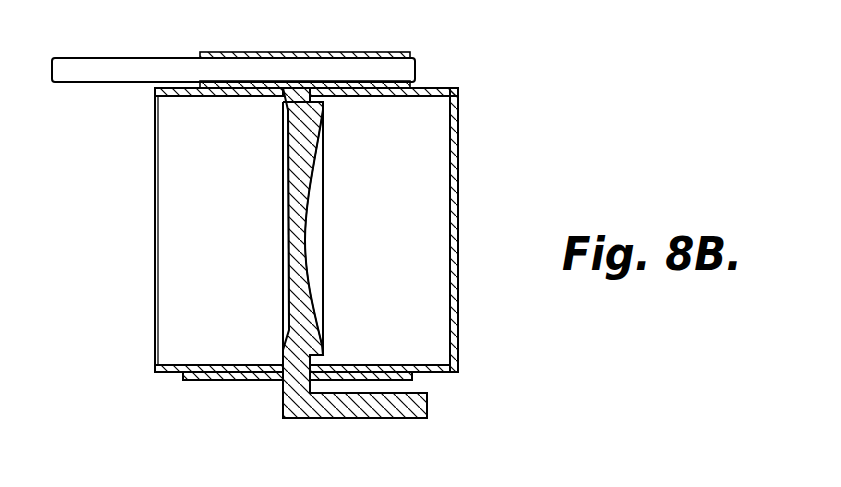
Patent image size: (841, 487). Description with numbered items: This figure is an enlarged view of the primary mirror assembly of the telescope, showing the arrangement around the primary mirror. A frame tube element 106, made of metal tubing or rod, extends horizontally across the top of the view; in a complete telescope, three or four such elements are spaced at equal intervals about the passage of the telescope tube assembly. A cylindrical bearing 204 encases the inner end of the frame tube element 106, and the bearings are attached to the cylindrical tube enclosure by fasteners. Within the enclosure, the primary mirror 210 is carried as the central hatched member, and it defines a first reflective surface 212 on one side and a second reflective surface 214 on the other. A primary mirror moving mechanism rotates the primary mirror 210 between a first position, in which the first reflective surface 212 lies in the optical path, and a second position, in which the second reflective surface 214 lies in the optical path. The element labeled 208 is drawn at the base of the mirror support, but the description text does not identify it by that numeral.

The frame tube element 106 is at (82, 62).
The cylindrical bearing 204 is at (276, 52).
The mounting base 208 is at (343, 410).
The primary mirror 210 is at (297, 98).
The first reflective surface 212 is at (285, 236).
The second reflective surface 214 is at (315, 228).